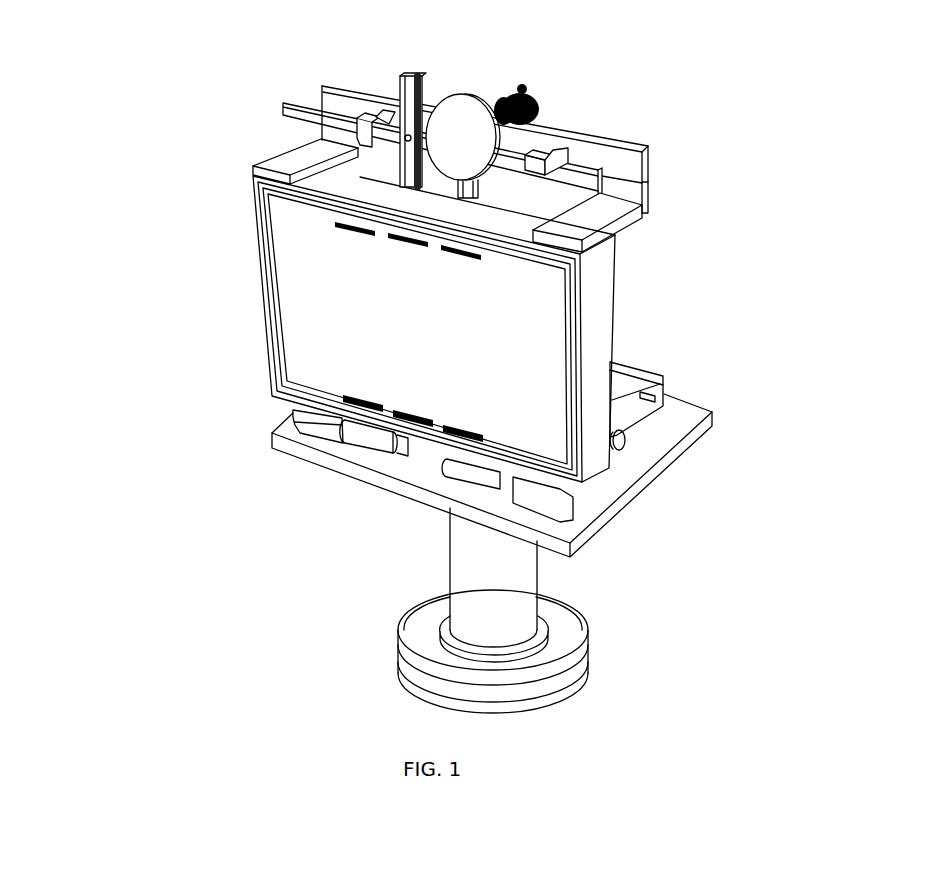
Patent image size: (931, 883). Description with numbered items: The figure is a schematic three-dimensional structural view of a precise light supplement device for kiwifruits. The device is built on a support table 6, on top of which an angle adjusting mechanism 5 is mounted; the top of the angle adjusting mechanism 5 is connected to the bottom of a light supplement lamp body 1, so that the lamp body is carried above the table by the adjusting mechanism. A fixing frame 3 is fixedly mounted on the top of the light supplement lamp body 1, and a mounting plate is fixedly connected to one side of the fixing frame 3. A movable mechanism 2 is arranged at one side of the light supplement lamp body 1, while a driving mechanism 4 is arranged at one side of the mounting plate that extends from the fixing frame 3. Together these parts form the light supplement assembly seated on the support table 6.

The light supplement lamp body 1 is at (290, 255).
The movable mechanism 2 is at (403, 78).
The fixing frame 3 is at (288, 160).
The driving mechanism 4 is at (525, 100).
The angle adjusting mechanism 5 is at (664, 375).
The support table 6 is at (618, 503).